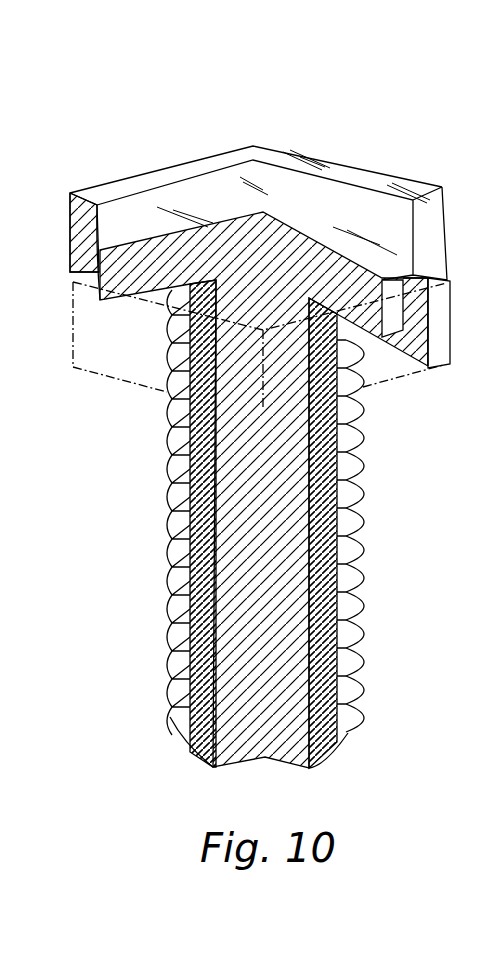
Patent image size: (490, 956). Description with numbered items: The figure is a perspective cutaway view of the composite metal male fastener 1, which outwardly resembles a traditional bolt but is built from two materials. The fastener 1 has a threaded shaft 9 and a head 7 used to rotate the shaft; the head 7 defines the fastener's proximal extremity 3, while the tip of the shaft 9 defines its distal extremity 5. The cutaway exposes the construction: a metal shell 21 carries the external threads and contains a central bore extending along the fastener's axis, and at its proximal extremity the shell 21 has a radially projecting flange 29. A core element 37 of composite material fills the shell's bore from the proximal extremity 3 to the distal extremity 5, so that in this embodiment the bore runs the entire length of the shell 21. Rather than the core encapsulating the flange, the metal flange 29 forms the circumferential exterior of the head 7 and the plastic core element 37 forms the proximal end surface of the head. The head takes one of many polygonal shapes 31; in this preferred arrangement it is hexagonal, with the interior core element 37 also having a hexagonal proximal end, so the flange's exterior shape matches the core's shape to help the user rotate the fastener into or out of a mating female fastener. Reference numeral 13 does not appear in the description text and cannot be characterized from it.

The composite metal male fastener 1 is at (367, 127).
The proximal extremity 3 is at (157, 177).
The distal extremity 5 is at (323, 768).
The head 7 is at (0, 210).
The threaded shaft 9 is at (340, 520).
The side flange 13 is at (446, 323).
The shell 21 is at (170, 518).
The flange 29 is at (85, 192).
The polygonal shape 31 is at (367, 272).
The core element 37 is at (172, 622).